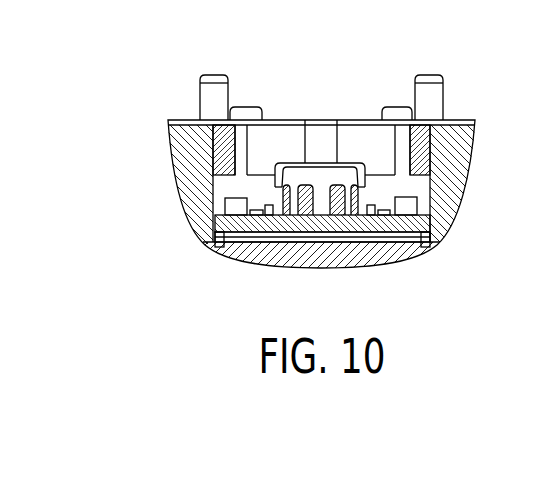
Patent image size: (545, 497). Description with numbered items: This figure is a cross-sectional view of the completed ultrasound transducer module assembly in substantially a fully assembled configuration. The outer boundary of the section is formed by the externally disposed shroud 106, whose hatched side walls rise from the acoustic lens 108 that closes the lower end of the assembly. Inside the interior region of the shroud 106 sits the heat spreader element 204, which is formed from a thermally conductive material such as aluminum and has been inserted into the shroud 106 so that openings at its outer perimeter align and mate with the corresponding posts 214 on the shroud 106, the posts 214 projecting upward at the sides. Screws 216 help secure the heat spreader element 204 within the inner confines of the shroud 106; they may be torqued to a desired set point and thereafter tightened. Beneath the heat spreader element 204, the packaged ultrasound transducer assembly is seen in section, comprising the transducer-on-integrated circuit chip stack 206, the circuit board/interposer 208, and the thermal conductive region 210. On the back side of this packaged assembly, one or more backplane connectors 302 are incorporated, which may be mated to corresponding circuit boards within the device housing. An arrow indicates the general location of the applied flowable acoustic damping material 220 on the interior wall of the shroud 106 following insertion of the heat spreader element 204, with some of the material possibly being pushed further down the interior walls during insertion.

The shroud 106 is at (195, 143).
The acoustic lens 108 is at (258, 258).
The heat spreader element 204 is at (293, 130).
The transducer-on-integrated circuit chip stack 206 is at (292, 245).
The circuit board/interposer 208 is at (428, 228).
The thermal conductive region 210 is at (372, 235).
The posts 214 is at (440, 100).
The screws 216 is at (393, 108).
The flowable acoustic damping material 220 is at (205, 172).
The backplane connectors 302 is at (345, 217).